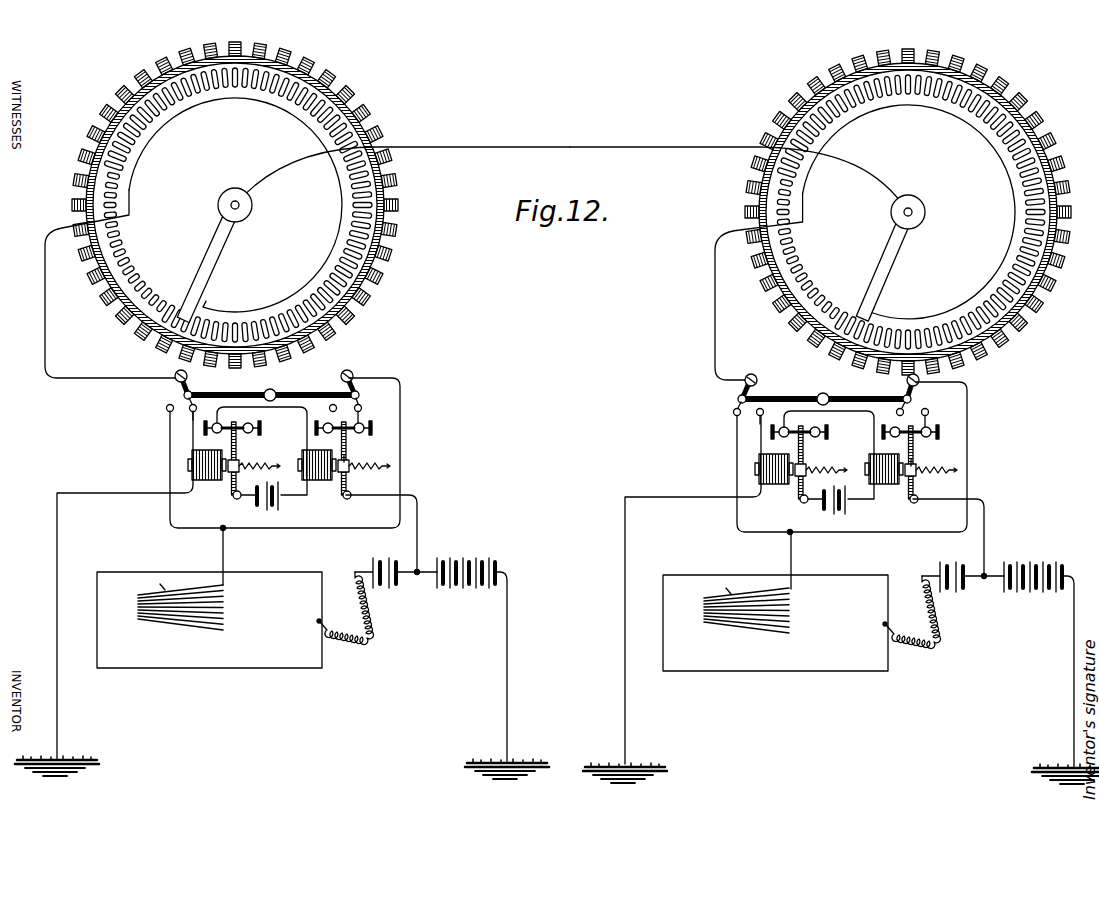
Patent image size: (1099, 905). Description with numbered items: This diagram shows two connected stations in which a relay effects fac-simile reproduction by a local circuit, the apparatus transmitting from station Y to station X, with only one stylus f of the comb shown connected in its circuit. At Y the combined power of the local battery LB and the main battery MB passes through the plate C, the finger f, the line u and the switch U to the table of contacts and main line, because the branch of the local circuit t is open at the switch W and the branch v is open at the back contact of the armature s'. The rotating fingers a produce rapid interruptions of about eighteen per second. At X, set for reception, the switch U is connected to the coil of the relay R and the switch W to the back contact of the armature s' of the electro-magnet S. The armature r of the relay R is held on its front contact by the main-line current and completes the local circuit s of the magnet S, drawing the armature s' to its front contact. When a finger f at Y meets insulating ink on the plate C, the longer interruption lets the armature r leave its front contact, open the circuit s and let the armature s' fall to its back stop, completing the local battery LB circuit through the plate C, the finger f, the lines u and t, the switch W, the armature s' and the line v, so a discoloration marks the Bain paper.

The station X is at (402, 140).
The station Y is at (830, 153).
The toothed wheel A is at (392, 235).
The slotted commutator ring B is at (575, 208).
The rotating fingers a is at (212, 255).
The switch U is at (456, 389).
The switch W is at (640, 389).
The local circuit branch t is at (567, 465).
The relay R is at (517, 465).
The electro-magnet S is at (302, 462).
The armature r is at (516, 428).
The local circuit s is at (605, 422).
The armature s' is at (351, 454).
The line u is at (424, 588).
The line v is at (672, 535).
The plate C is at (492, 621).
The stylus f is at (439, 584).
The local battery LB is at (679, 567).
The main battery MB is at (755, 654).